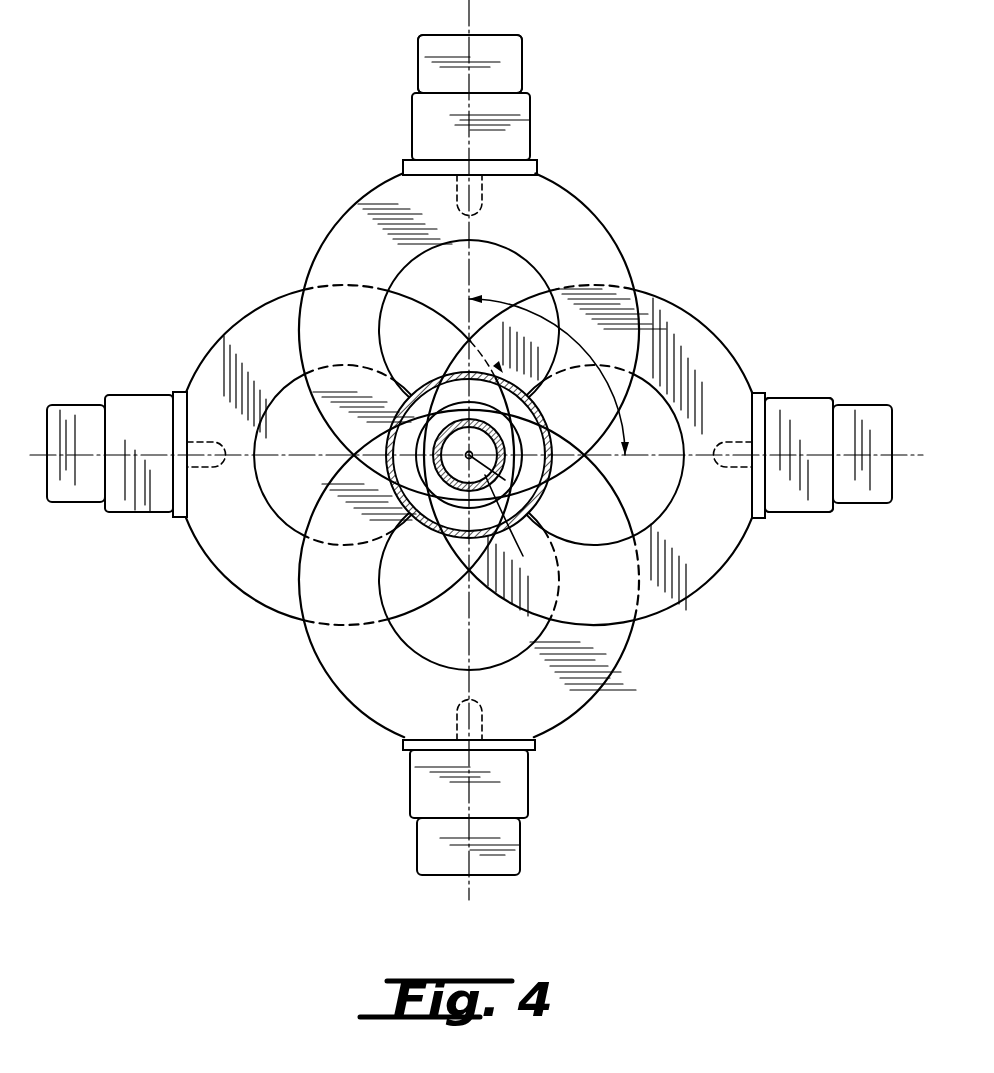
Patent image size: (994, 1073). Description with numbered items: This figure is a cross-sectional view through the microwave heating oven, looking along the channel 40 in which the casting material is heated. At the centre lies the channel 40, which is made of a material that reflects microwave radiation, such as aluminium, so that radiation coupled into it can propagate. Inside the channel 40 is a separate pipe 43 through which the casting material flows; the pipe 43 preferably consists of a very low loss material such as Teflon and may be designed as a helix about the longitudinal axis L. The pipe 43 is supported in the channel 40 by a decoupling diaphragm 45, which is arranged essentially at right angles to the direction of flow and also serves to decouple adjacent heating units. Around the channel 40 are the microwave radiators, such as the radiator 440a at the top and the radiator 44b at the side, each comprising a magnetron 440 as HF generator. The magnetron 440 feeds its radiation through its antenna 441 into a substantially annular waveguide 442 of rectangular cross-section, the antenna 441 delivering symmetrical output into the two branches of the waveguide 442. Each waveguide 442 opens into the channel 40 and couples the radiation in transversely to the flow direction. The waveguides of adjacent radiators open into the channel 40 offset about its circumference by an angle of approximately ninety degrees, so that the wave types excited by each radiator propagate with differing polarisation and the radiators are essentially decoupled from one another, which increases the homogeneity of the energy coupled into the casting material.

The channel 40 is at (386, 479).
The pipe 43 is at (505, 480).
The decoupling diaphragm 45 is at (447, 417).
The magnetron 440 is at (433, 80).
The upper connection boss 440a is at (536, 101).
The microwave radiator 44b is at (811, 392).
The antenna 441 is at (482, 208).
The waveguide 442 is at (337, 233).
The longitudinal axis L is at (514, 526).